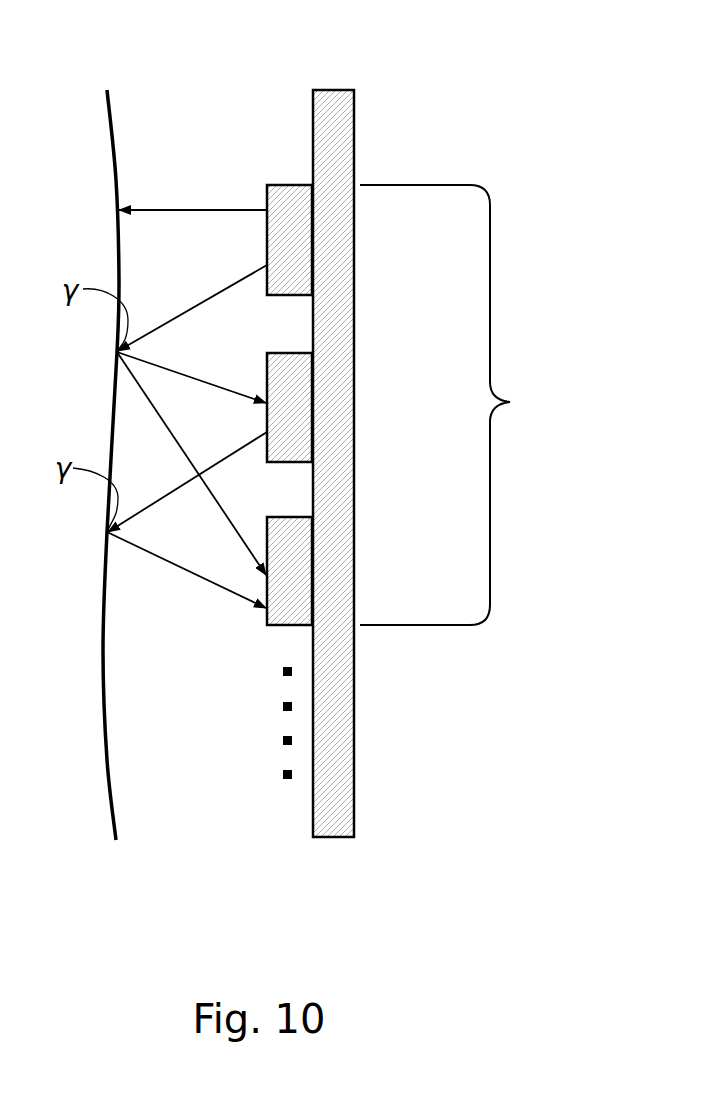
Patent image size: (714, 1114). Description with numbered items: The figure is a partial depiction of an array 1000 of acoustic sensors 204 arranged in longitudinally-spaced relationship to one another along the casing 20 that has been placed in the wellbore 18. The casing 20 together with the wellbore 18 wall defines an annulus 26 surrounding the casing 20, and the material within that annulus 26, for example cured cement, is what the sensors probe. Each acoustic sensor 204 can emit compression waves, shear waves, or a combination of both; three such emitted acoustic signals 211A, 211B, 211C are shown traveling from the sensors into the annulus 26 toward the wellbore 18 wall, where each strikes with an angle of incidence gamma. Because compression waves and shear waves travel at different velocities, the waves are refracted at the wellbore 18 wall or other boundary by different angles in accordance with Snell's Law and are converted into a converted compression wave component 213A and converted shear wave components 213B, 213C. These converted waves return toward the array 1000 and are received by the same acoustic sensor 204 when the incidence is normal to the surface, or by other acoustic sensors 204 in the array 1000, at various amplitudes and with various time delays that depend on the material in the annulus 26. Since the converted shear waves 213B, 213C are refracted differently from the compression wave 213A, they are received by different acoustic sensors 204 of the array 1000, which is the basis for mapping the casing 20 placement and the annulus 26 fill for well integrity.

The wellbore 18 is at (110, 140).
The casing 20 is at (332, 90).
The annulus 26 is at (180, 827).
The acoustic sensor 204 is at (300, 240).
The acoustic signal 211A is at (188, 209).
The acoustic signal 211B is at (187, 312).
The acoustic signal 211C is at (155, 500).
The converted compression wave 213A is at (223, 388).
The converted shear wave 213B is at (187, 448).
The converted shear wave 213C is at (183, 571).
The array 1000 is at (510, 402).